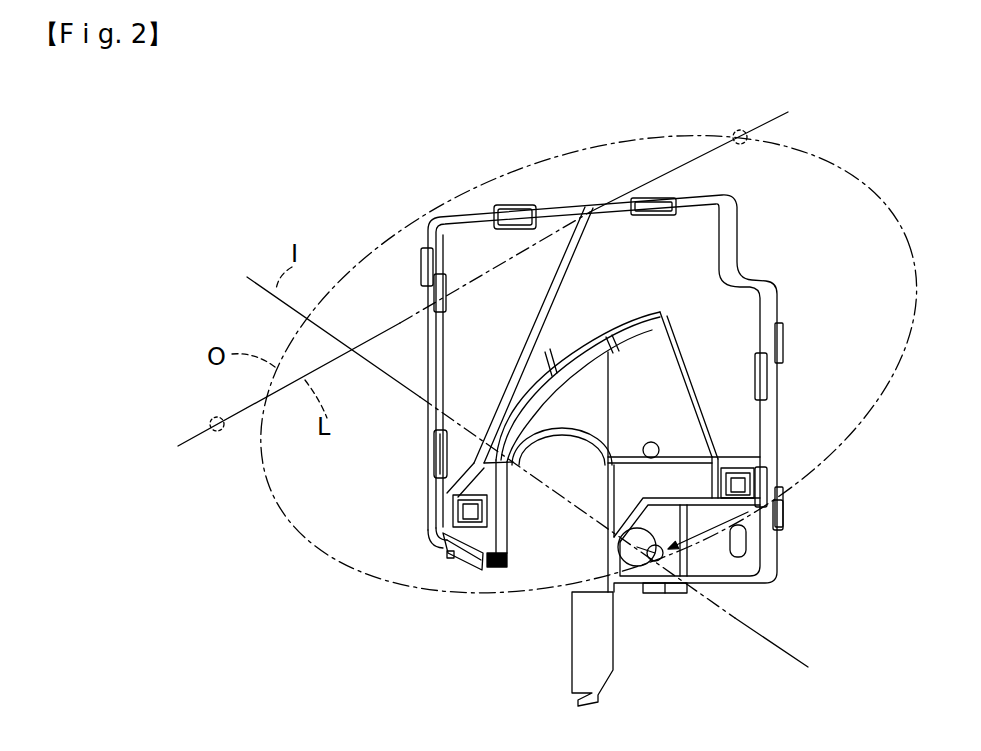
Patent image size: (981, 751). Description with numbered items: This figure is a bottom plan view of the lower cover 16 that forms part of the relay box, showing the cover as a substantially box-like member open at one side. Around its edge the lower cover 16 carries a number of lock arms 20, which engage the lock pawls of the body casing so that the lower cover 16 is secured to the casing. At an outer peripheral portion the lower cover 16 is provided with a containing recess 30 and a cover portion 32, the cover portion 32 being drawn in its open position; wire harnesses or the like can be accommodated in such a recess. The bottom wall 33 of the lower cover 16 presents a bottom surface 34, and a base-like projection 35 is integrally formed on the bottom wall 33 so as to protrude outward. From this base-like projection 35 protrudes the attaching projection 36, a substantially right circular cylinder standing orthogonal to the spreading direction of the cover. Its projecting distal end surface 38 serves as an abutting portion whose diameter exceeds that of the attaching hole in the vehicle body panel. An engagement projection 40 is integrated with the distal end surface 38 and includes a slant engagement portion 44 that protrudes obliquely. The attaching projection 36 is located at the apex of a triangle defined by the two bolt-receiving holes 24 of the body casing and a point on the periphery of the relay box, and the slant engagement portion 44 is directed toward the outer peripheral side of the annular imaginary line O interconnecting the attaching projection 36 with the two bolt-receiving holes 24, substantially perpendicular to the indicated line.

The lower cover 16 is at (760, 207).
The lock arms 20 is at (517, 205).
The bolt-receiving hole 24 is at (757, 140).
The containing recess 30 is at (512, 533).
The cover portion 32 is at (588, 634).
The bottom wall 33 is at (648, 352).
The bottom surface 34 is at (673, 253).
The base-like projection 35 is at (700, 553).
The attaching projection 36 is at (662, 608).
The projecting distal end surface 38 is at (630, 565).
The engagement projection 40 is at (778, 523).
The slant engagement portion 44 is at (650, 590).